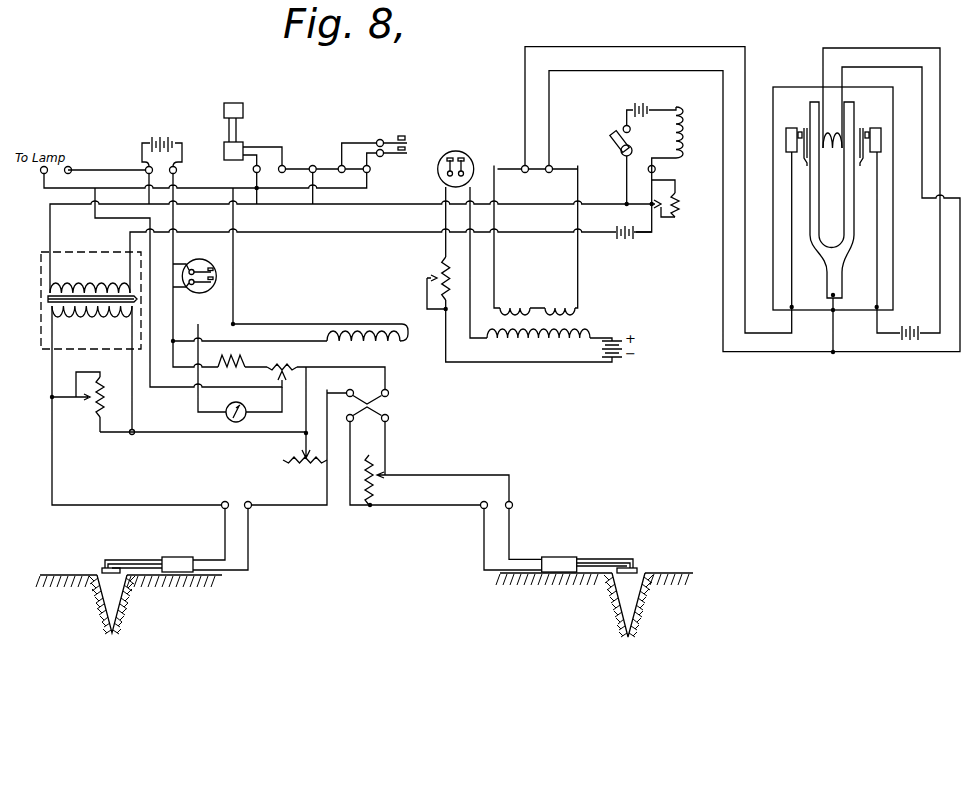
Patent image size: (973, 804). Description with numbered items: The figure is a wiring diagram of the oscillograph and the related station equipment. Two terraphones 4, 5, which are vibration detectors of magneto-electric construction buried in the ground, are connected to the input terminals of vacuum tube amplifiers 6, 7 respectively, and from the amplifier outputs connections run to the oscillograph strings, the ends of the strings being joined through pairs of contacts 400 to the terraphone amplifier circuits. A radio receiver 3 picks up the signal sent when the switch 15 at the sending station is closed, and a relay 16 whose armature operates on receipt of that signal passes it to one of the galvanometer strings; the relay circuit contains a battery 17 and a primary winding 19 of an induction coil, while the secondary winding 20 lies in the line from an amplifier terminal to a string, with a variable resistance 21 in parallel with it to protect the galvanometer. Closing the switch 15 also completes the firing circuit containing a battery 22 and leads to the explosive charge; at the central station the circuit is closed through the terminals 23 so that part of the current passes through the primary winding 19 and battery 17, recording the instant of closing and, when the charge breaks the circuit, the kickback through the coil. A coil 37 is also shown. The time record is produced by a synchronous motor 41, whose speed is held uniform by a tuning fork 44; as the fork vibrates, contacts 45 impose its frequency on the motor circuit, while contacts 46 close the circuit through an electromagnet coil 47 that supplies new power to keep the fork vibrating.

The radio receiver 3 is at (240, 104).
The relay 16 is at (236, 148).
The terminals 23 is at (369, 172).
The primary winding 19 is at (102, 282).
The secondary winding 20 is at (110, 318).
The variable resistance 21 is at (92, 405).
The inductance coil 37 is at (385, 350).
The synchronous motor 41 is at (545, 318).
The contacts 400 is at (368, 406).
The battery 22 is at (638, 104).
The switch 15 is at (612, 141).
The battery 17 is at (626, 250).
The tuning fork 44 is at (852, 218).
The contacts 45 is at (800, 127).
The contacts 46 is at (868, 127).
The coil of electro-magnet 47 is at (832, 153).
The vacuum tube amplifier 6 is at (180, 560).
The vacuum tube amplifier 7 is at (562, 562).
The terraphone 4 is at (130, 603).
The terraphone 5 is at (646, 607).